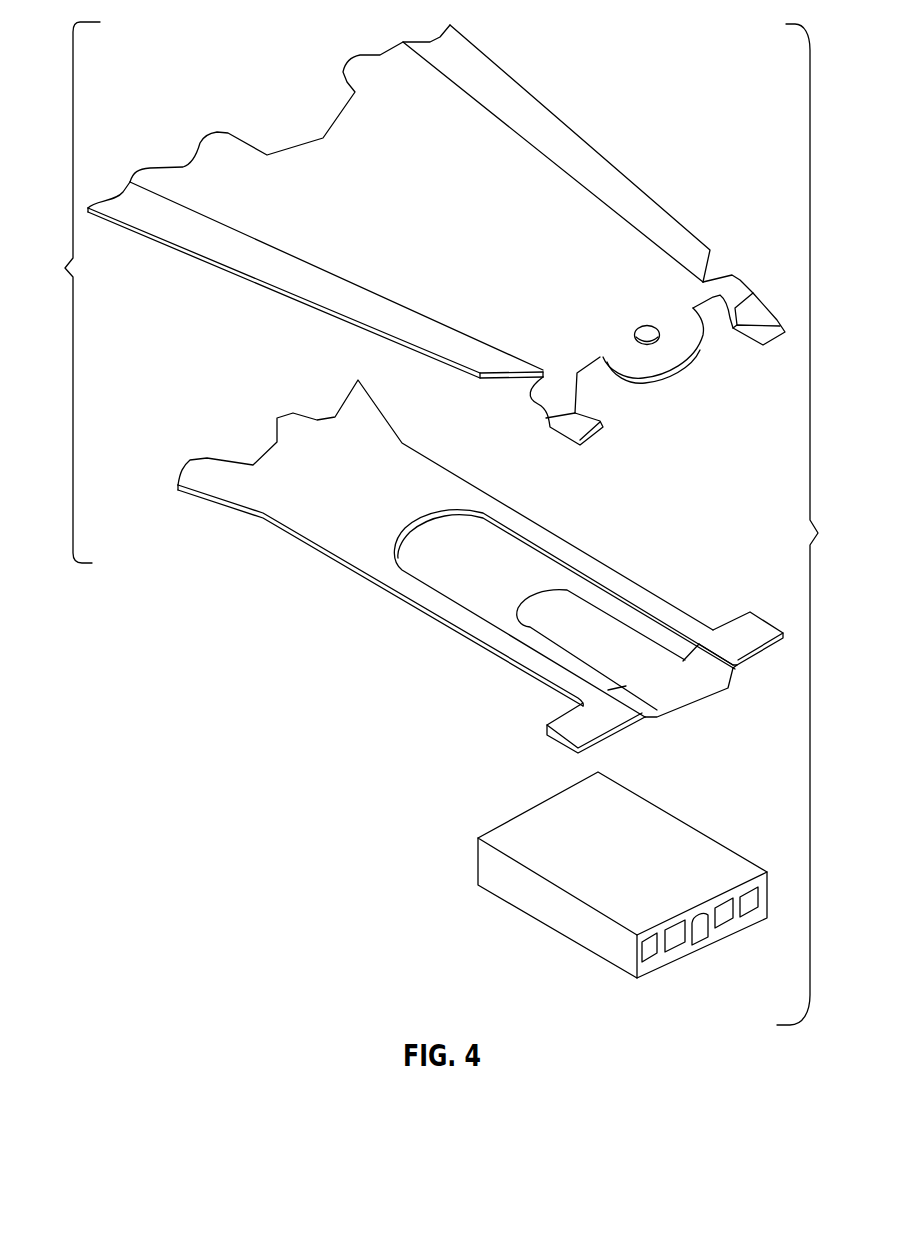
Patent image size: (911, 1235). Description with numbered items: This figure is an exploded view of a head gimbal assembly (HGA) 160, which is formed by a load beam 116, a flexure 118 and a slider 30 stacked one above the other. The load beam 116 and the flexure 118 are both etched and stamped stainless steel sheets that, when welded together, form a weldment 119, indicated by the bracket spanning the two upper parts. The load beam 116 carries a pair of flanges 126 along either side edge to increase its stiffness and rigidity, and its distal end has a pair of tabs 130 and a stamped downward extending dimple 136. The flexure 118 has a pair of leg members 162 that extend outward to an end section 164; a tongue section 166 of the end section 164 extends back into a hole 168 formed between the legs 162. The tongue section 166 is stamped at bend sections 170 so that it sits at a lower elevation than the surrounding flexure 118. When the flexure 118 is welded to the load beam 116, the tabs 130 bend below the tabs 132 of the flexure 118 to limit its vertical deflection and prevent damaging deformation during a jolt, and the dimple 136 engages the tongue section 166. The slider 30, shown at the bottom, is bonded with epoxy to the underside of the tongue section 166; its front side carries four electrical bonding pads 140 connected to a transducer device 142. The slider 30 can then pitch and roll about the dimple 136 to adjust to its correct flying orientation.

The slider 30 is at (477, 862).
The load beam member 116 is at (375, 188).
The flexure member 118 is at (305, 488).
The weldment 119 is at (57, 292).
The flanges 126 is at (567, 125).
The tabs 130 is at (767, 318).
The tabs 132 is at (743, 630).
The dimple 136 is at (643, 323).
The electrical bonding pads 140 is at (750, 892).
The transducer device 142 is at (700, 940).
The head gimbal assembly 160 is at (826, 524).
The leg members 162 is at (528, 517).
The end section 164 is at (713, 700).
The tongue section 166 is at (572, 627).
The hole 168 is at (458, 540).
The bend sections 170 is at (730, 670).